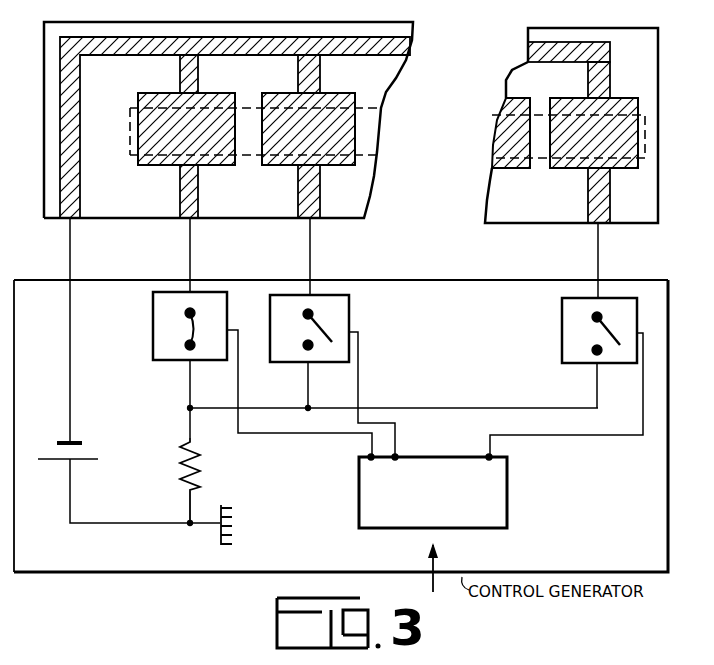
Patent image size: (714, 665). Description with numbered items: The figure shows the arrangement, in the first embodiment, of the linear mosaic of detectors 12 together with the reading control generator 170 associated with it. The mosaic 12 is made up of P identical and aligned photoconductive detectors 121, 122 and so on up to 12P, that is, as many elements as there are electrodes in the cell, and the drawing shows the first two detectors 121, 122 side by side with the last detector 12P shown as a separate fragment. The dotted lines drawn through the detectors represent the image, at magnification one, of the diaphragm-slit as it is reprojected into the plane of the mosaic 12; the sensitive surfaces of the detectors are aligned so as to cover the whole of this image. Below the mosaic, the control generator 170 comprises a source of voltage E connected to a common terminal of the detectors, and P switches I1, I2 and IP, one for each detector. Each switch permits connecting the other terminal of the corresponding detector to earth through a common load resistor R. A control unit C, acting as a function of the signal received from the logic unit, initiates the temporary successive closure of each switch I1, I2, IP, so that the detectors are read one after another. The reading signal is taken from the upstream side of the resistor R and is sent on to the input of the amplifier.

The linear mosaic of detectors 12 is at (113, 218).
The photoconductive detector 121 is at (162, 165).
The photoconductive detector 122 is at (295, 165).
The photoconductive detector 12P is at (574, 168).
The reading control generator 170 is at (488, 294).
The switch I1 is at (222, 296).
The switch I2 is at (342, 300).
The switch IP is at (622, 305).
The source of voltage E is at (85, 457).
The common load resistor R is at (176, 462).
The control unit C is at (507, 486).